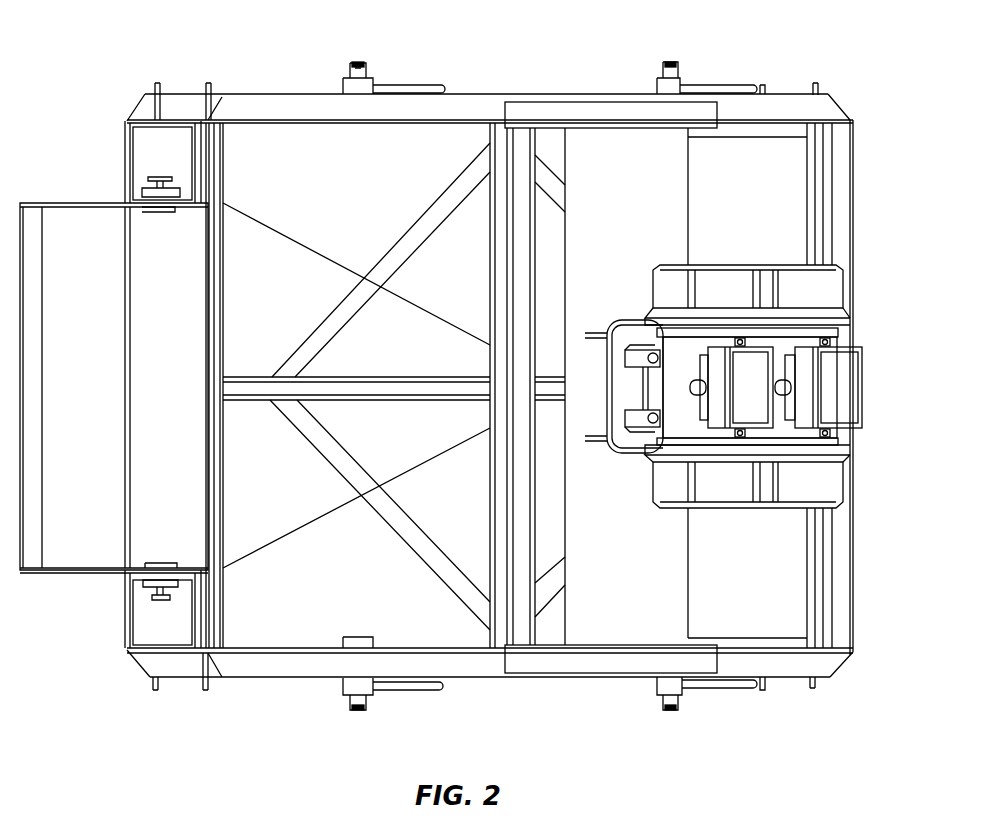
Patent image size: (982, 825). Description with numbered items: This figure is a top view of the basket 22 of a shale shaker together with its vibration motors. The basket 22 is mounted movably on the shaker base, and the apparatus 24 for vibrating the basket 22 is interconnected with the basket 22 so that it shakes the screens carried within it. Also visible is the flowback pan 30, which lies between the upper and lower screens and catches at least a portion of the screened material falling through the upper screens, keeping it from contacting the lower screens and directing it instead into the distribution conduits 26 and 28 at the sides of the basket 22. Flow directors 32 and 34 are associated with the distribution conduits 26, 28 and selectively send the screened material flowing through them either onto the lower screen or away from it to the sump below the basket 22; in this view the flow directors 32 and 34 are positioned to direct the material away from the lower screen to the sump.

The basket 22 is at (523, 95).
The apparatus for vibrating the basket 24 is at (835, 487).
The distribution conduit 26 is at (125, 150).
The distribution conduit 28 is at (125, 637).
The flowback pan 30 is at (310, 630).
The flow director 32 is at (142, 188).
The flow director 34 is at (142, 588).